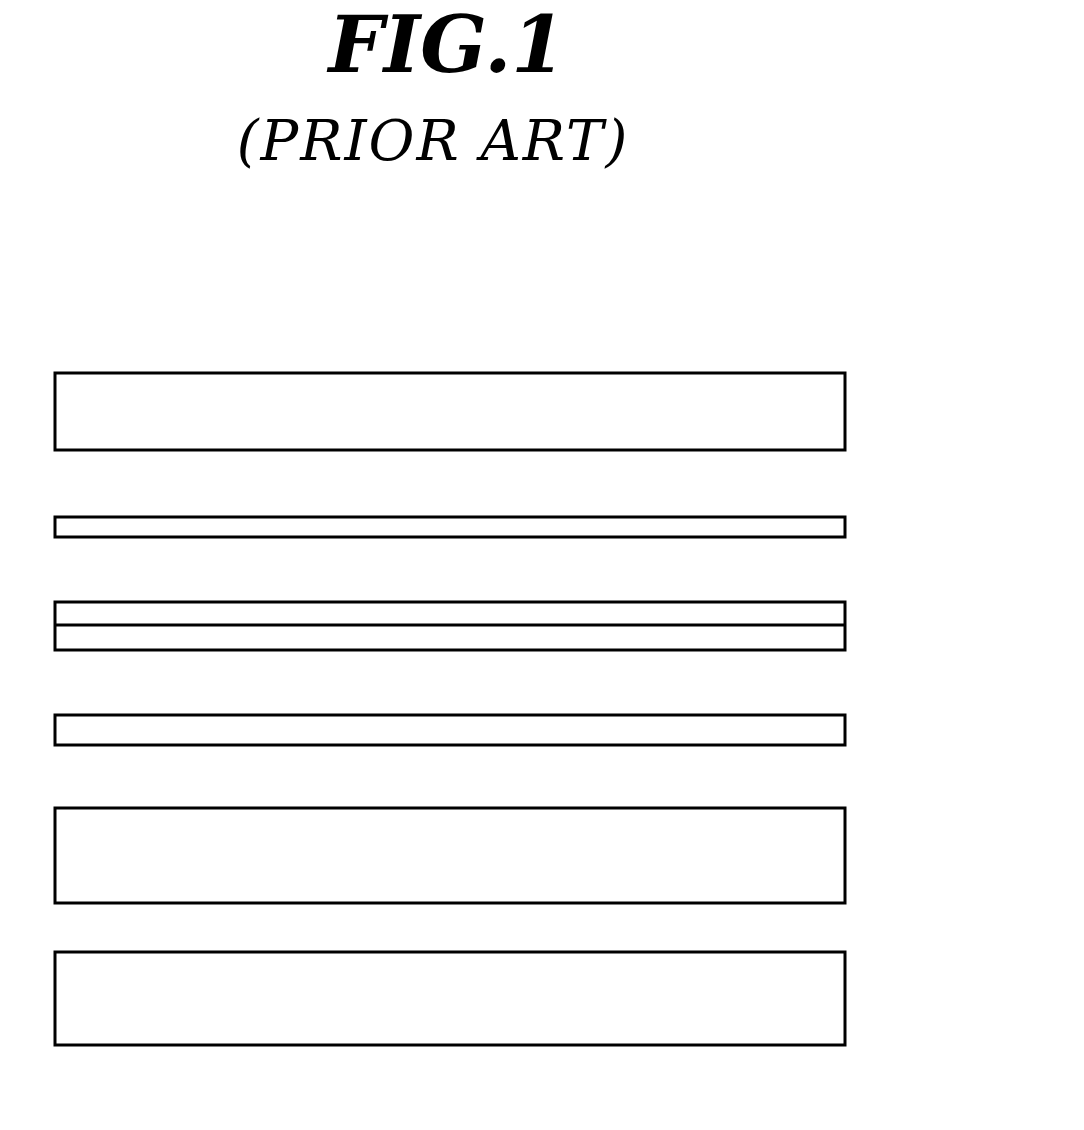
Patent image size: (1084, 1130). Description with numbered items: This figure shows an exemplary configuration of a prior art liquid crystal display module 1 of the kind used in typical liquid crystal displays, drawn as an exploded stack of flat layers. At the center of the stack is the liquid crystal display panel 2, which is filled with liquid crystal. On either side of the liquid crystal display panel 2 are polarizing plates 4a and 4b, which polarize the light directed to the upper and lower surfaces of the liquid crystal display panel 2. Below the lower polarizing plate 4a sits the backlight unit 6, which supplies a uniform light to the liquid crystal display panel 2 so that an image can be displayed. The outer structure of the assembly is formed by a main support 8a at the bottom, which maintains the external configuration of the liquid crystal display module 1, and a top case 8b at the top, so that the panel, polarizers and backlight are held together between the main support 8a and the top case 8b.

The liquid crystal display module 1 is at (413, 274).
The liquid crystal display panel 2 is at (836, 635).
The polarizing plate 4a is at (836, 730).
The polarizing plate 4b is at (836, 525).
The backlight unit 6 is at (836, 857).
The main support 8a is at (836, 999).
The top case 8b is at (836, 412).